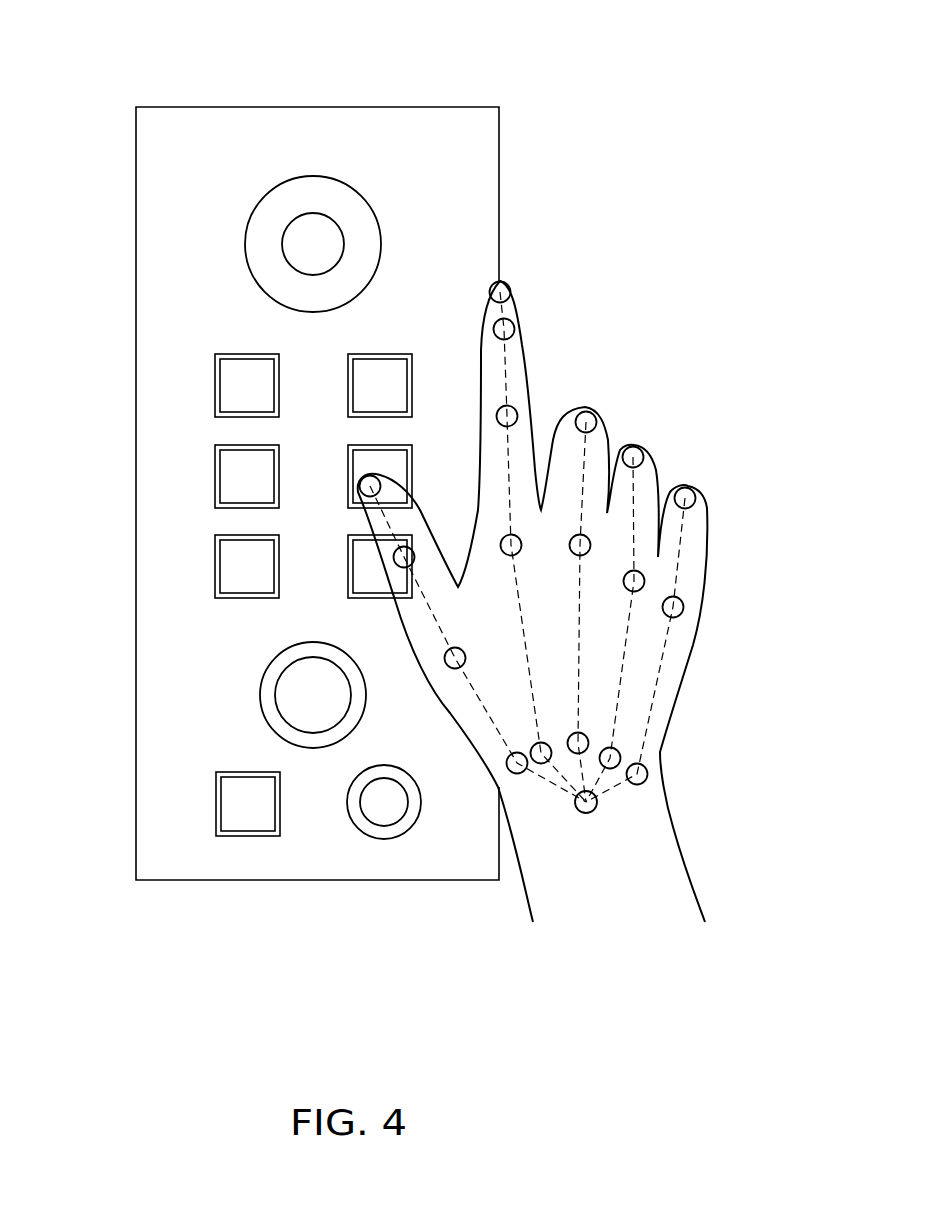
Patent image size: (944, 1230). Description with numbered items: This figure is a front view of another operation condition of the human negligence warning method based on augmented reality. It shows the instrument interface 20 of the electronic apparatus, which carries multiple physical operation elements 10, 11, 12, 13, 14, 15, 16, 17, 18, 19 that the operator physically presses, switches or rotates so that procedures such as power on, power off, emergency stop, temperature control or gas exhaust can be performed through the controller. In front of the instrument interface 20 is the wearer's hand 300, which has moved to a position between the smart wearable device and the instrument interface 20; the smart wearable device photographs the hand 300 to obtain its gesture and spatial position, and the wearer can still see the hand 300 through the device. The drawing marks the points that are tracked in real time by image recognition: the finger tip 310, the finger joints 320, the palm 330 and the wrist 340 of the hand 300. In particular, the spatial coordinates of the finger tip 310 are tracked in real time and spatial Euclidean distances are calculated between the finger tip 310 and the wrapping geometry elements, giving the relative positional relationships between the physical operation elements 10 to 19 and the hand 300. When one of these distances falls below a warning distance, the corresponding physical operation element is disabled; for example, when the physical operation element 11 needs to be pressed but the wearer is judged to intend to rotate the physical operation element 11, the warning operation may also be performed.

The physical operation element 10 is at (303, 192).
The physical operation element 11 is at (233, 382).
The physical operation element 12 is at (373, 395).
The physical operation element 13 is at (223, 478).
The physical operation element 14 is at (365, 457).
The physical operation element 15 is at (233, 568).
The physical operation element 16 is at (363, 579).
The physical operation element 17 is at (288, 696).
The physical operation element 18 is at (235, 802).
The physical operation element 19 is at (373, 806).
The instrument interface 20 is at (175, 107).
The hand 300 is at (718, 615).
The finger tip 310 is at (510, 287).
The finger joints 320 is at (517, 413).
The palm 330 is at (602, 645).
The wrist 340 is at (653, 787).